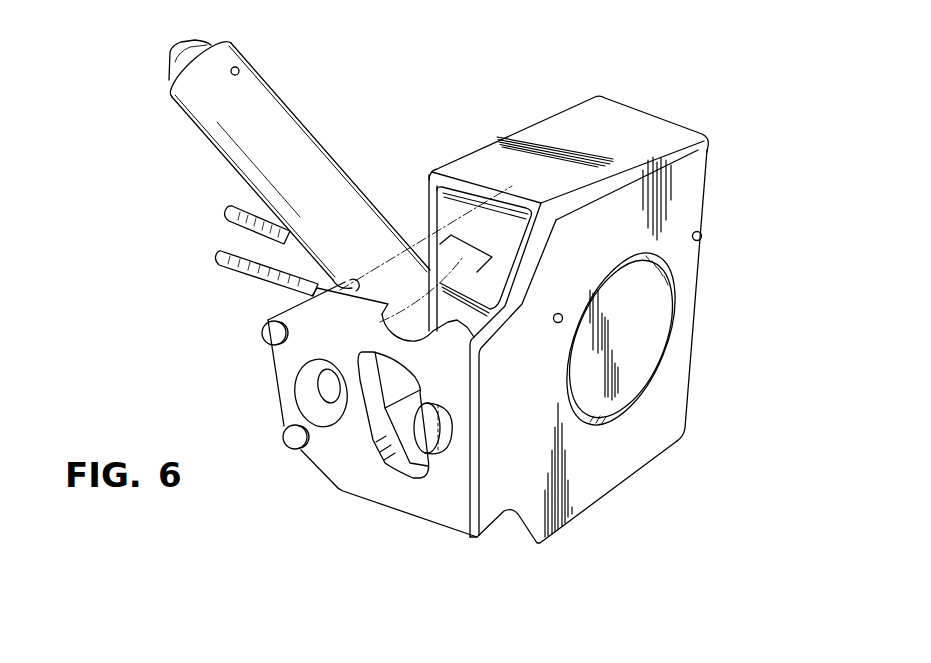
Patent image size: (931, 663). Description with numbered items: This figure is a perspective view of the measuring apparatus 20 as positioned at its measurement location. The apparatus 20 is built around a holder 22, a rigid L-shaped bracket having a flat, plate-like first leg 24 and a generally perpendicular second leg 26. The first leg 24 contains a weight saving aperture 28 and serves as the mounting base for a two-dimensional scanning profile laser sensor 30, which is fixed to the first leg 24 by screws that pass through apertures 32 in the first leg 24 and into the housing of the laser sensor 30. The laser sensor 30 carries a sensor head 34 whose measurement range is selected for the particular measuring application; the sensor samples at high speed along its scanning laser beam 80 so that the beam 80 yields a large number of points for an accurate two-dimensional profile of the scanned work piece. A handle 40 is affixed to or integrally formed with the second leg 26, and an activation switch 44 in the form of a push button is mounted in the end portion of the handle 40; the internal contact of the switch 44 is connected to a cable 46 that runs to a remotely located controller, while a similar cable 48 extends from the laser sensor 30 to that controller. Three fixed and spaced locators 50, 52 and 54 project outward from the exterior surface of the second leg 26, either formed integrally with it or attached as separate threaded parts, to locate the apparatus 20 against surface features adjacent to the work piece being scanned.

The apparatus 20 is at (598, 57).
The holder 22 is at (715, 152).
The first leg 24 is at (600, 503).
The second leg 26 is at (356, 282).
The weight saving aperture 28 is at (621, 402).
The 2D scanning profile laser sensor 30 is at (530, 112).
The apertures 32 is at (702, 240).
The sensor head 34 is at (452, 218).
The handle 40 is at (195, 129).
The activation switch 44 is at (185, 43).
The cable 46 is at (220, 258).
The cable 48 is at (230, 215).
The locator 50 is at (287, 438).
The locator 52 is at (266, 333).
The locator 54 is at (431, 433).
The scanning laser beam 80 is at (452, 265).